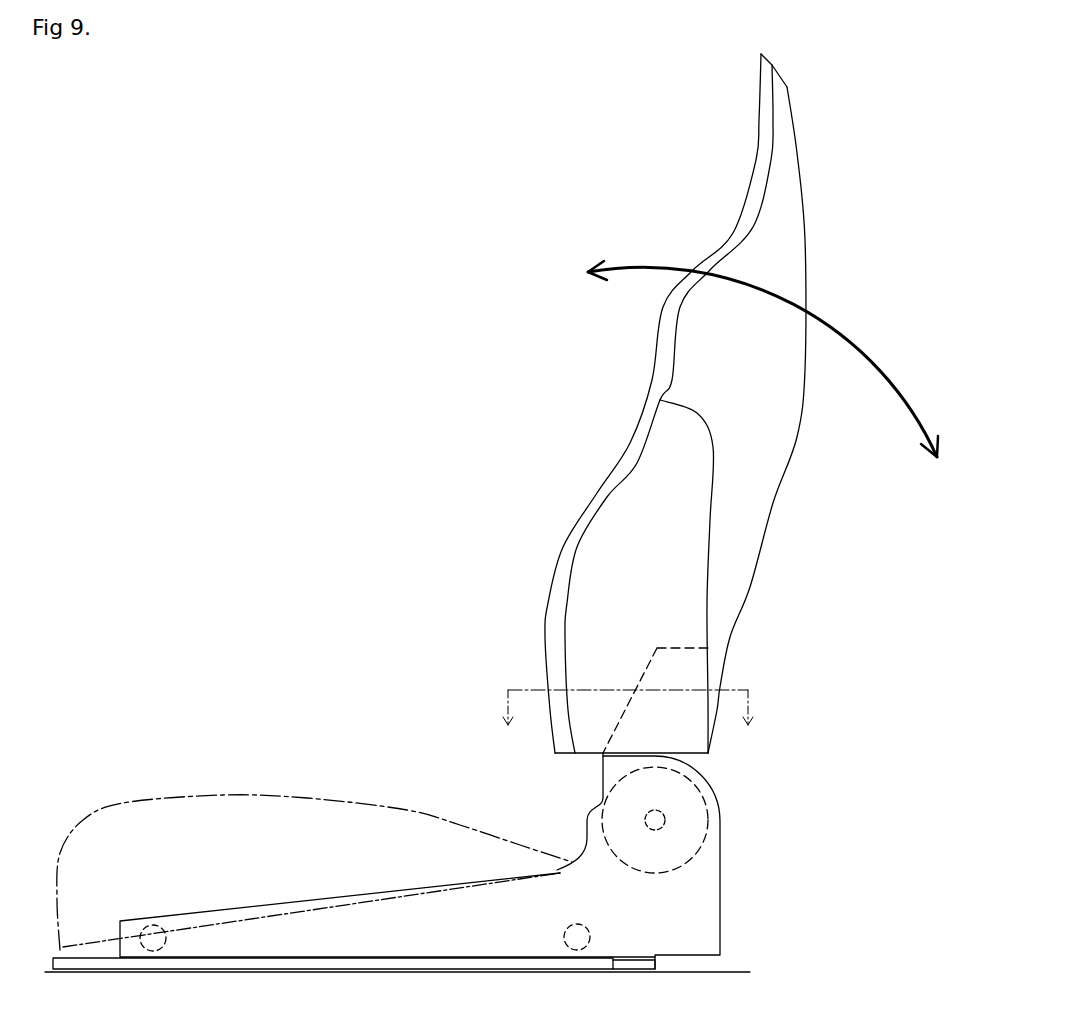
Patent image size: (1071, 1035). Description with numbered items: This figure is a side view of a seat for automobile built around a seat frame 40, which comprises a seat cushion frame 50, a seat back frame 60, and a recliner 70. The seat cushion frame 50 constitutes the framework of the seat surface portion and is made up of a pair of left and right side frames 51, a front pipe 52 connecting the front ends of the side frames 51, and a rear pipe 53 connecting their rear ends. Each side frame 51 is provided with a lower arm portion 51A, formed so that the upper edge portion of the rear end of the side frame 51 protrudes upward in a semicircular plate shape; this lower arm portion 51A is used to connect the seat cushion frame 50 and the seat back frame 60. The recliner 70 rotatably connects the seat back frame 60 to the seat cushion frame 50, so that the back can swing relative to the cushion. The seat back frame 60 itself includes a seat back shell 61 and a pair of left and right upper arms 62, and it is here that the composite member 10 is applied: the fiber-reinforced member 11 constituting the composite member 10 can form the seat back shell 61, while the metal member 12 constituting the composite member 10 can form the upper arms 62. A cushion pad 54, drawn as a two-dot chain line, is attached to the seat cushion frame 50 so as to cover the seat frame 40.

The seat frame 40 is at (207, 205).
The seat back frame 60 is at (640, 403).
The composite member 10 is at (635, 423).
The seat back shell 61 is at (579, 576).
The fiber-reinforced member 11 is at (635, 513).
The upper arms 62 is at (577, 730).
The metal member 12 is at (610, 762).
The cushion pad 54 is at (223, 795).
The seat cushion frame 50 is at (290, 902).
The side frames 51 is at (460, 895).
The lower arm portion 51A is at (715, 807).
The recliner 70 is at (707, 832).
The front pipe 52 is at (168, 941).
The rear pipe 53 is at (590, 938).